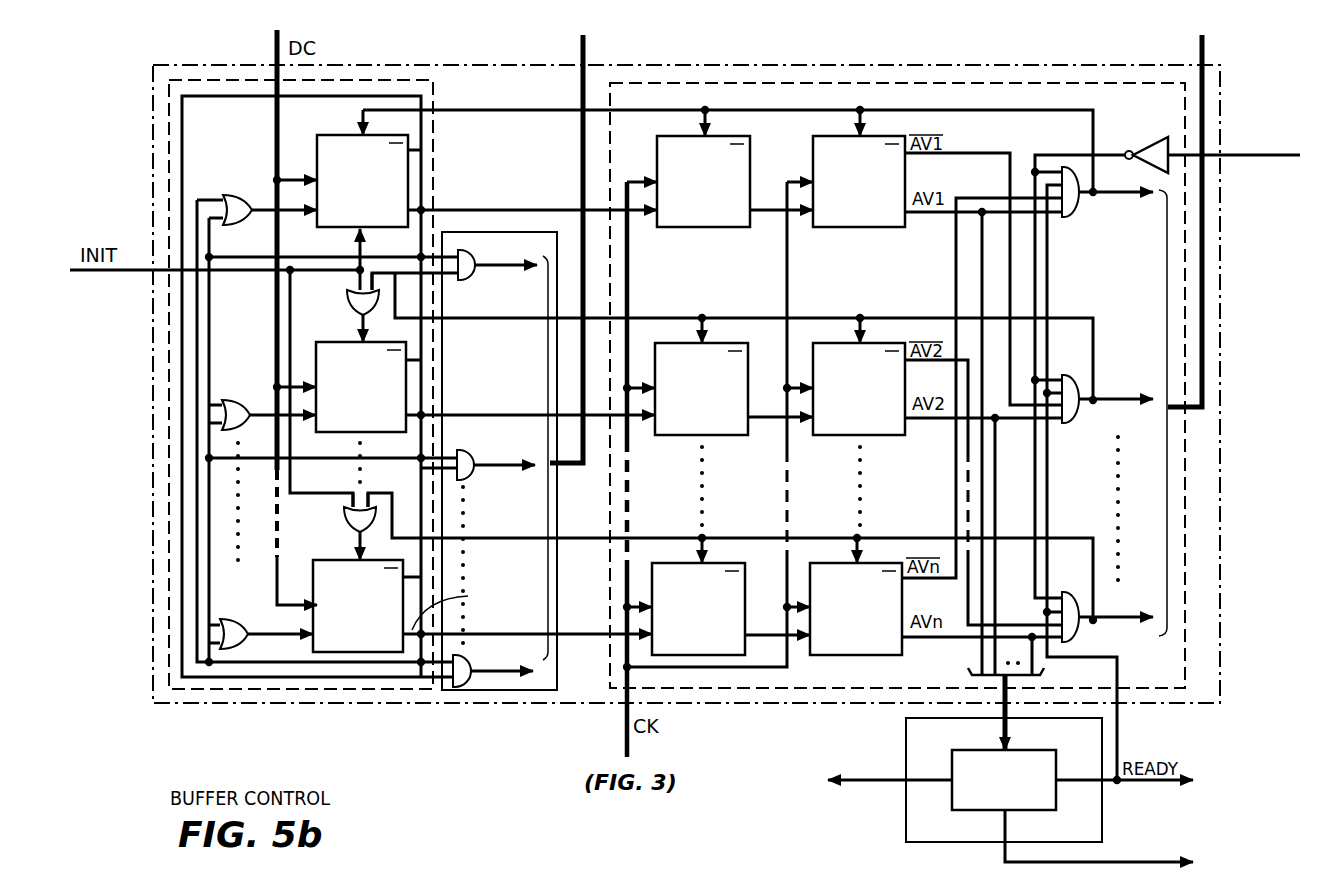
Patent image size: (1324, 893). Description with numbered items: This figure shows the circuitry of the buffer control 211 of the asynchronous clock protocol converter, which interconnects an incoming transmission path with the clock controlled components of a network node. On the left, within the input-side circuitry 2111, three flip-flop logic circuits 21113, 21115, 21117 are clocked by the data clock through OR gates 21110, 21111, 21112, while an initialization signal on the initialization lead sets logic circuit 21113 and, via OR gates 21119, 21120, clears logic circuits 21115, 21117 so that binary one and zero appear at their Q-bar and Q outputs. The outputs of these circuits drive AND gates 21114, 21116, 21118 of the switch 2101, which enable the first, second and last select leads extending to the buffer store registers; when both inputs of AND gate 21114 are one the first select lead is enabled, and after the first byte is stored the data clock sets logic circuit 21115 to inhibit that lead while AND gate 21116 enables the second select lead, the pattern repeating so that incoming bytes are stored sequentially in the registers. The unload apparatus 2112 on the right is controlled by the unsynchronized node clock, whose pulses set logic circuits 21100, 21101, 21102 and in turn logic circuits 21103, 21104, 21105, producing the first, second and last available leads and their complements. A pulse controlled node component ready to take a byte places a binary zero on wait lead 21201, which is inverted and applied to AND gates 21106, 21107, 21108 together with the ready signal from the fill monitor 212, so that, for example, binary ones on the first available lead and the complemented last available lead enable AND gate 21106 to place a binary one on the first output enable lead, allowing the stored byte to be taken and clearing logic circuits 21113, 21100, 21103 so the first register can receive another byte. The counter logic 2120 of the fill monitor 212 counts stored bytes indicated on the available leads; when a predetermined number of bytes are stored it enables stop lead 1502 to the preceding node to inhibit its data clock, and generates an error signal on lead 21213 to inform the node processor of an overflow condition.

The buffer control 211 is at (256, 703).
The buffer control circuitry 2111 is at (366, 690).
The switch 2101 is at (498, 690).
The unload apparatus 2112 is at (612, 690).
The fill monitor 212 is at (906, 735).
The counter logic 2120 is at (1027, 751).
The stop lead 1502 is at (873, 782).
The error lead 21213 is at (1003, 856).
The wait lead 21201 is at (1260, 158).
The OR gate 21110 is at (238, 193).
The OR gate 21111 is at (241, 399).
The OR gate 21112 is at (239, 619).
The logic circuit 21113 is at (326, 135).
The AND gate 21114 is at (470, 276).
The logic circuit 21115 is at (406, 386).
The AND gate 21116 is at (468, 476).
The logic circuit 21117 is at (318, 560).
The AND gate 21118 is at (467, 652).
The OR gate 21119 is at (348, 308).
The OR gate 21120 is at (346, 521).
The logic circuit 21100 is at (681, 229).
The logic circuit 21101 is at (730, 341).
The logic circuit 21102 is at (739, 555).
The logic circuit 21103 is at (838, 229).
The logic circuit 21104 is at (887, 341).
The logic circuit 21105 is at (896, 555).
The AND gate 21106 is at (1076, 208).
The AND gate 21107 is at (1076, 415).
The AND gate 21108 is at (1076, 634).